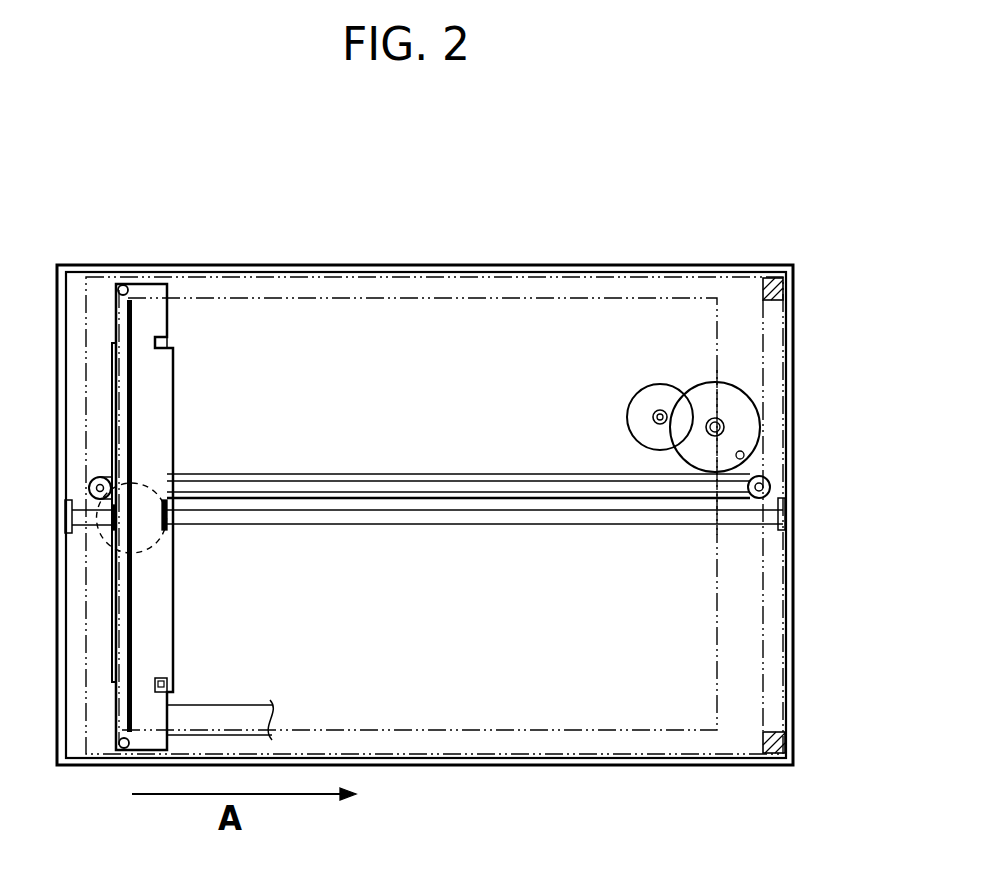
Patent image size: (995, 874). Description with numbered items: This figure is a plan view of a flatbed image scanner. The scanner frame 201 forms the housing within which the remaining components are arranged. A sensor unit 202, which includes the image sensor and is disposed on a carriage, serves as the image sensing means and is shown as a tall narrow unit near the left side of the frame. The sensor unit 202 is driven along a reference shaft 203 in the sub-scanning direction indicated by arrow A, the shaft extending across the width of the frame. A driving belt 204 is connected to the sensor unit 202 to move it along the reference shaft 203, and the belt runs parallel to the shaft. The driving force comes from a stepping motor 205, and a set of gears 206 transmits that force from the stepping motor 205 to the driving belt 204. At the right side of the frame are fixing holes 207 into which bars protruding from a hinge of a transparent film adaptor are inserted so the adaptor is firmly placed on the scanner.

The scanner frame 201 is at (363, 265).
The sensor unit 202 is at (122, 602).
The reference shaft 203 is at (423, 517).
The driving belt 204 is at (465, 472).
The stepping motor 205 is at (628, 397).
The set of gears 206 is at (745, 410).
The fixing holes 207 is at (783, 295).